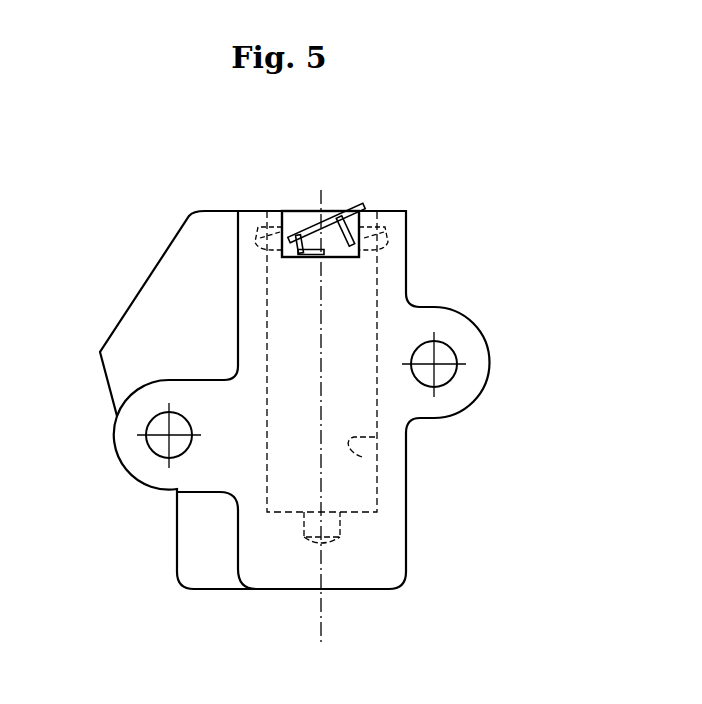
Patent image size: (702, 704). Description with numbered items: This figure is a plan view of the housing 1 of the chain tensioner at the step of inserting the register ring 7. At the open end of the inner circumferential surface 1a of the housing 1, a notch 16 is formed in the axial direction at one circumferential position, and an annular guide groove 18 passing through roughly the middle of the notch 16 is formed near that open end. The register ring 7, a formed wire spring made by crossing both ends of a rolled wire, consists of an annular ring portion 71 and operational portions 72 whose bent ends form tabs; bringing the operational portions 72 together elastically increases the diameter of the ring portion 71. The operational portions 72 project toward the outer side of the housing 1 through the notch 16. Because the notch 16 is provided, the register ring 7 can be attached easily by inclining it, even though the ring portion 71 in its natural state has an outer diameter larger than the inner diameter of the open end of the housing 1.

The housing 1 is at (140, 482).
The inner circumferential surface of the housing 1a is at (360, 455).
The register ring 7 is at (396, 215).
The notch 16 is at (295, 208).
The guide groove 18 is at (357, 257).
The ring portion 71 is at (365, 203).
The operational portions 72 is at (326, 232).